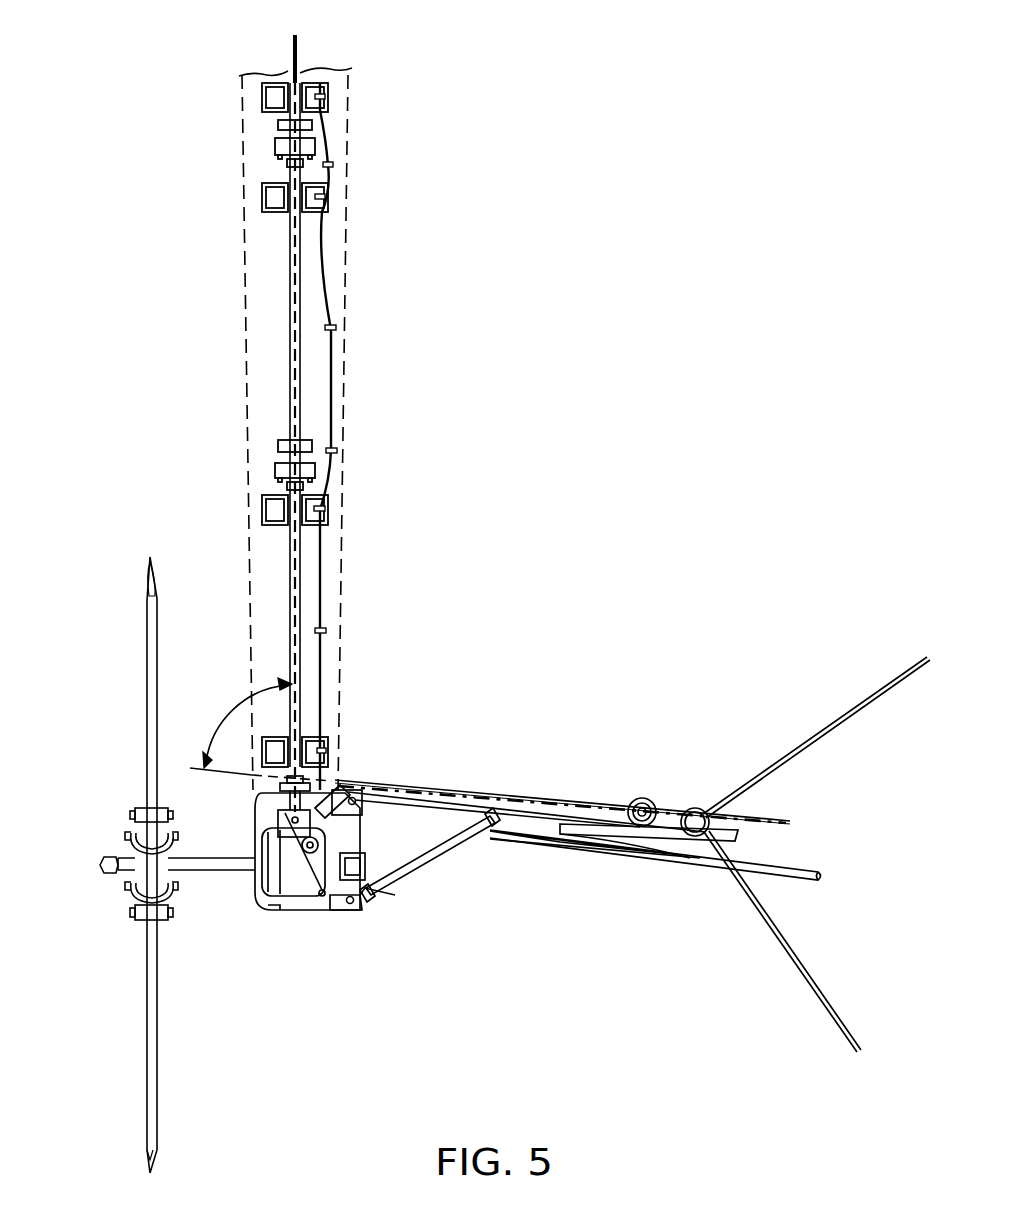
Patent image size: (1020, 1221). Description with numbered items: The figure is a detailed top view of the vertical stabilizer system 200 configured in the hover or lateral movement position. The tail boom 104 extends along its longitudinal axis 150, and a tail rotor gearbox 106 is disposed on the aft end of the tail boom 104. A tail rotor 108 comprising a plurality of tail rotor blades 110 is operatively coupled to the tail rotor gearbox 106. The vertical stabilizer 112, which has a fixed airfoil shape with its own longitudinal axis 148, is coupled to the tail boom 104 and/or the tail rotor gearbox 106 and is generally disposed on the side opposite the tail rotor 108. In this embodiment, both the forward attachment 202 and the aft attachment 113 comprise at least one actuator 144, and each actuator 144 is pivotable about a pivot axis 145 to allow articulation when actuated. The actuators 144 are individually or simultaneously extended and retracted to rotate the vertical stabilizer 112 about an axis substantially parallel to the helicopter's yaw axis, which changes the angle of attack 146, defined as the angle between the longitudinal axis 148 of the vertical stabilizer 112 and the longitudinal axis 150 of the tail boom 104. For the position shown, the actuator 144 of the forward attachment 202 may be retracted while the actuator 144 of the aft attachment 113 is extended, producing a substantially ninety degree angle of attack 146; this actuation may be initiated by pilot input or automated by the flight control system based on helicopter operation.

The tail boom 104 is at (246, 356).
The tail rotor gearbox 106 is at (270, 882).
The tail rotor 108 is at (106, 900).
The tail rotor blades 110 is at (147, 695).
The vertical stabilizer 112 is at (563, 796).
The aft attachment 113 is at (377, 958).
The actuator 144 is at (400, 808).
The pivot axis 145 is at (354, 795).
The angle of attack 146 is at (236, 716).
The longitudinal axis of the vertical stabilizer 148 is at (757, 815).
The longitudinal axis of the tail boom 150 is at (292, 54).
The vertical stabilizer system 200 is at (636, 596).
The forward attachment 202 is at (392, 828).